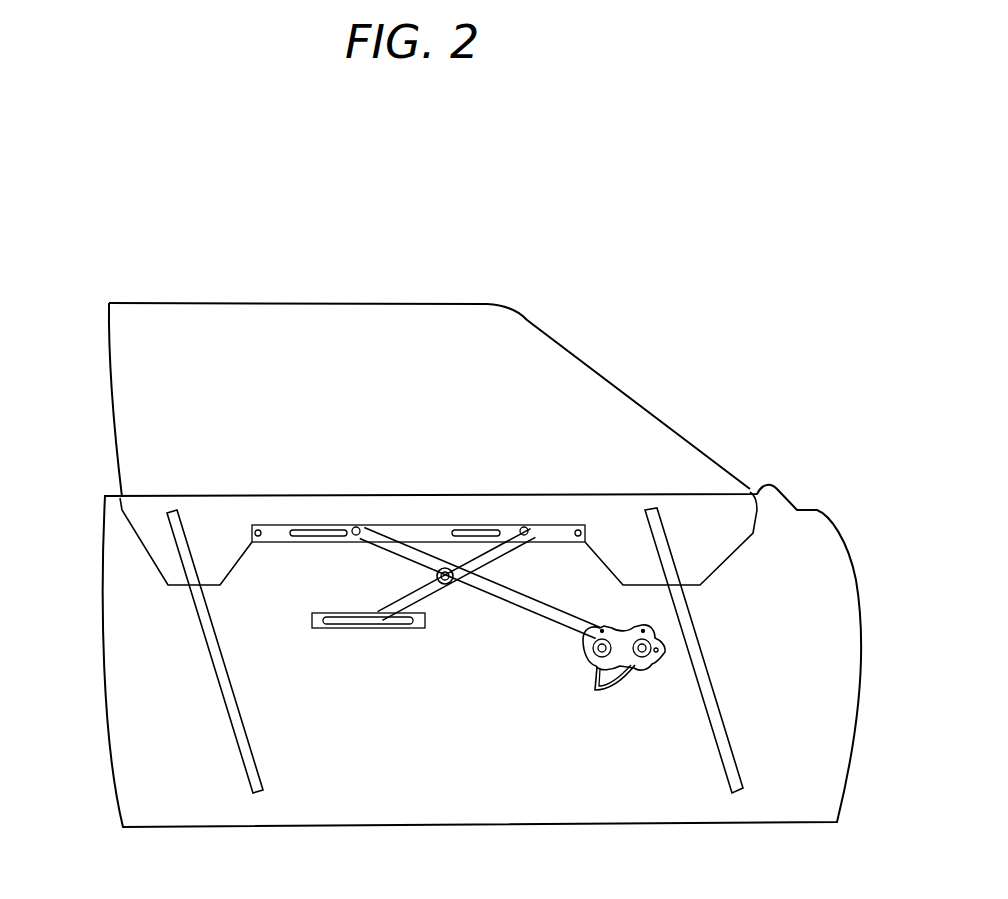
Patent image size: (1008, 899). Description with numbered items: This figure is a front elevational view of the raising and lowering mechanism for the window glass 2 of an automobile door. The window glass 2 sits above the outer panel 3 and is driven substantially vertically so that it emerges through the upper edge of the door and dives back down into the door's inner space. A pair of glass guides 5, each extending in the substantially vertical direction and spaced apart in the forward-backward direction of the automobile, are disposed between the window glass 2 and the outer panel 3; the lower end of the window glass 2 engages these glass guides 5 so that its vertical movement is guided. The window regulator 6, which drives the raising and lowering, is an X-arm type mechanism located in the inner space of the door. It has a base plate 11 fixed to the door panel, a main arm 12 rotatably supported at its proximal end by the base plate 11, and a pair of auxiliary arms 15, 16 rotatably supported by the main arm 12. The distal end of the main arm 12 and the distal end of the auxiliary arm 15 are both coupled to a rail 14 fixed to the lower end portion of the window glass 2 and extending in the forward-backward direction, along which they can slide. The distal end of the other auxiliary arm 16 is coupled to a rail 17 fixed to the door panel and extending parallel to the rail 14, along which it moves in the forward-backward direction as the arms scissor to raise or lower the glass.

The window glass 2 is at (108, 362).
The outer panel 3 is at (102, 642).
The glass guides 5 is at (258, 765).
The window regulator 6 is at (458, 596).
The base plate 11 is at (620, 624).
The main arm 12 is at (480, 598).
The rail 14 is at (415, 527).
The auxiliary arm 15 is at (493, 562).
The auxiliary arm 16 is at (392, 594).
The rail 17 is at (322, 628).